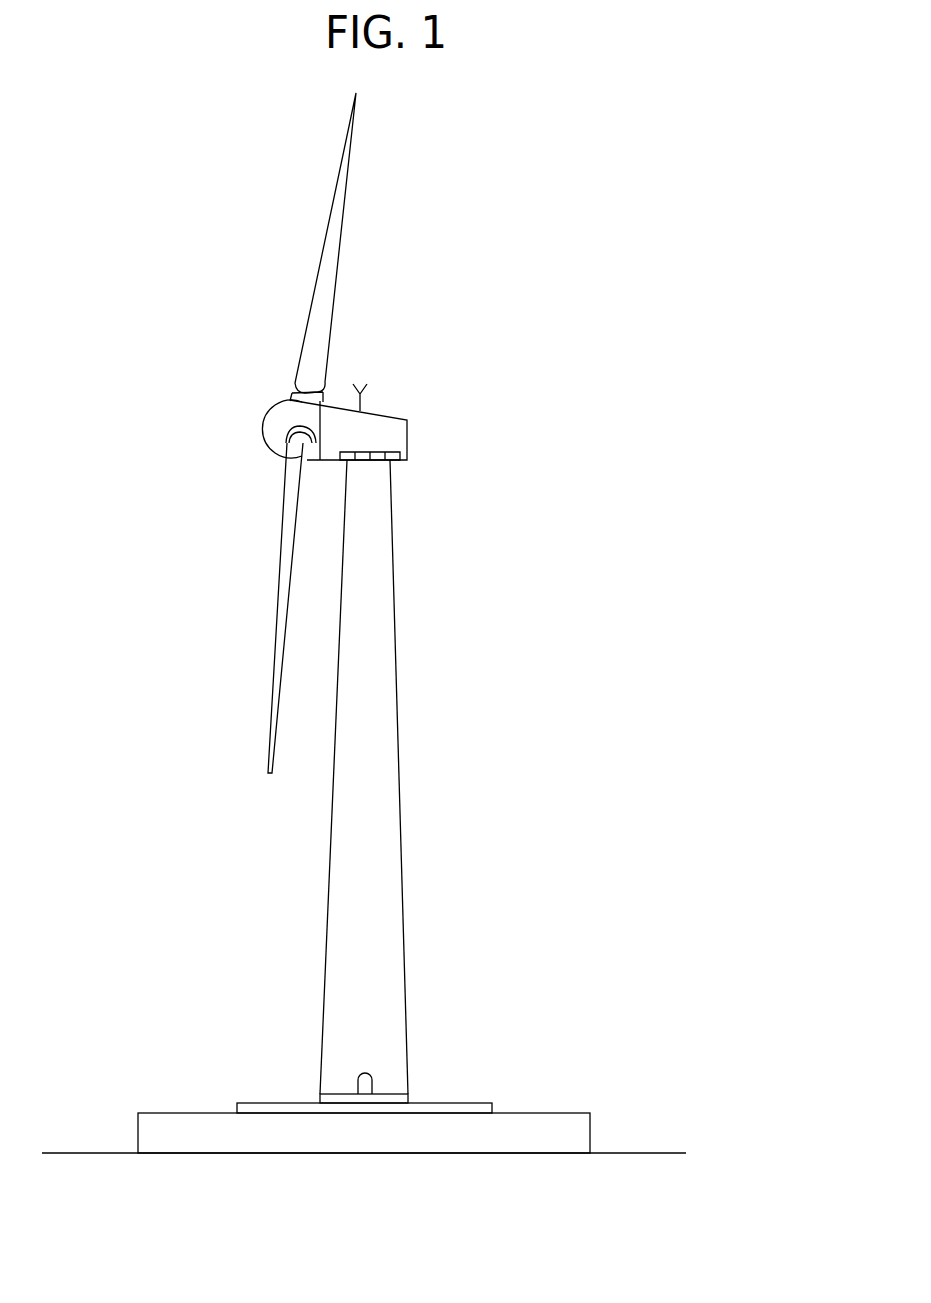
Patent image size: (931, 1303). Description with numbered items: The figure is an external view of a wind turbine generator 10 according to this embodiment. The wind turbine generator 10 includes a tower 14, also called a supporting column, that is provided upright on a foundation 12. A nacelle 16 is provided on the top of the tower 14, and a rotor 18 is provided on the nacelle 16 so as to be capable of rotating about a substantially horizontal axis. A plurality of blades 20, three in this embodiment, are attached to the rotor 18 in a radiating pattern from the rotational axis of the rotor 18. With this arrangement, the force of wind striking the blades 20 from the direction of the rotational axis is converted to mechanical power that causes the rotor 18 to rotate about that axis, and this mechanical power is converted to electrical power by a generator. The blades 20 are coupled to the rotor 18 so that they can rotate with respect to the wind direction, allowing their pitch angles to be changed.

The wind turbine generator 10 is at (526, 359).
The foundation 12 is at (555, 1113).
The tower 14 is at (395, 635).
The nacelle 16 is at (380, 411).
The rotor 18 is at (264, 426).
The blade 20 is at (345, 195).